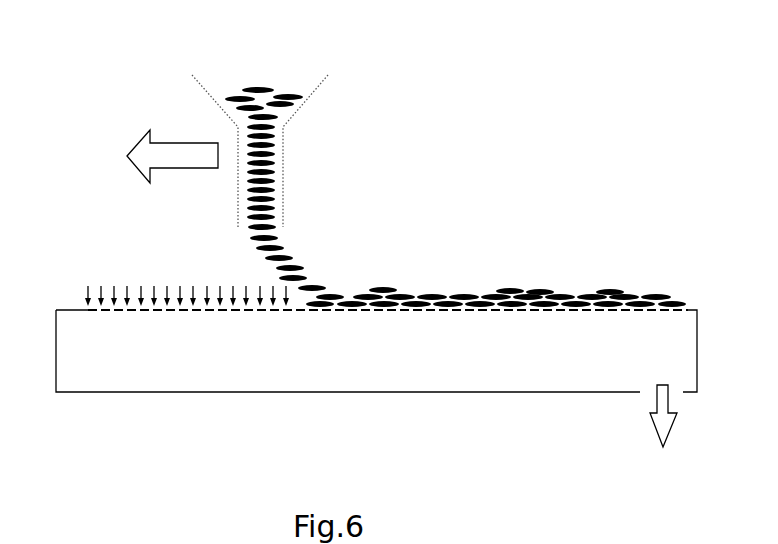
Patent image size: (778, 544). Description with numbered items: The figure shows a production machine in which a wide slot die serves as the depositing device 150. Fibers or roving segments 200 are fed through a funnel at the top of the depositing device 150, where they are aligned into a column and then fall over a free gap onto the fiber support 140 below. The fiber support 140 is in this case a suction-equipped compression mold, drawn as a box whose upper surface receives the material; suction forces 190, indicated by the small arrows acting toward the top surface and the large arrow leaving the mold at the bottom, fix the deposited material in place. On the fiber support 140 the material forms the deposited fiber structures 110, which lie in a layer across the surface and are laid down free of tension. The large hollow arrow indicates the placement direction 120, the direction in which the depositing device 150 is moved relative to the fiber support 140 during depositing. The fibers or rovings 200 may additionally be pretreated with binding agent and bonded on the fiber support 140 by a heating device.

The fiber structures 110 is at (465, 295).
The placement direction 120 is at (180, 140).
The fiber support 140 is at (170, 394).
The depositing device 150 is at (280, 163).
The suction force 190 is at (101, 292).
The fibers or roving segments 200 is at (255, 88).